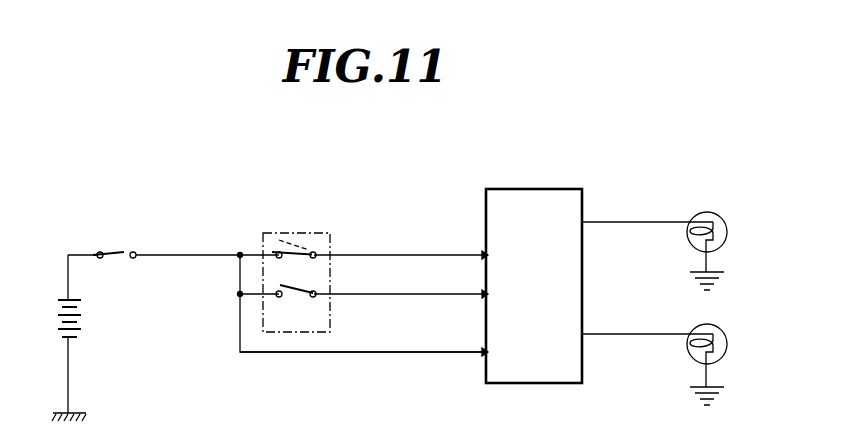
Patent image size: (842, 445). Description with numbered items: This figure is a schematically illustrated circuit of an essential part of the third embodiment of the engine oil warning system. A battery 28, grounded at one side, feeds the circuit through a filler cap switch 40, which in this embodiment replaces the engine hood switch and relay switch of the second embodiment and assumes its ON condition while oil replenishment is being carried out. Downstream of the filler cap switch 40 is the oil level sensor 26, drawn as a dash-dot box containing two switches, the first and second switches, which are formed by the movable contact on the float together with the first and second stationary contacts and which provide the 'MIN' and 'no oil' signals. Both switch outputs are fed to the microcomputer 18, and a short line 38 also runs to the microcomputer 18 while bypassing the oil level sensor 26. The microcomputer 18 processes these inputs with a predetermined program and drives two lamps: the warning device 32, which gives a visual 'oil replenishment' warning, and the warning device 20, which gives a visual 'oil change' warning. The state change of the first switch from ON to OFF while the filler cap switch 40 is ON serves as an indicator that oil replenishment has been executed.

The microcomputer 18 is at (518, 189).
The warning device 20 is at (694, 326).
The oil level sensor 26 is at (307, 233).
The battery 28 is at (83, 322).
The warning device 32 is at (694, 213).
The short line 38 is at (355, 353).
The filler cap switch 40 is at (118, 249).